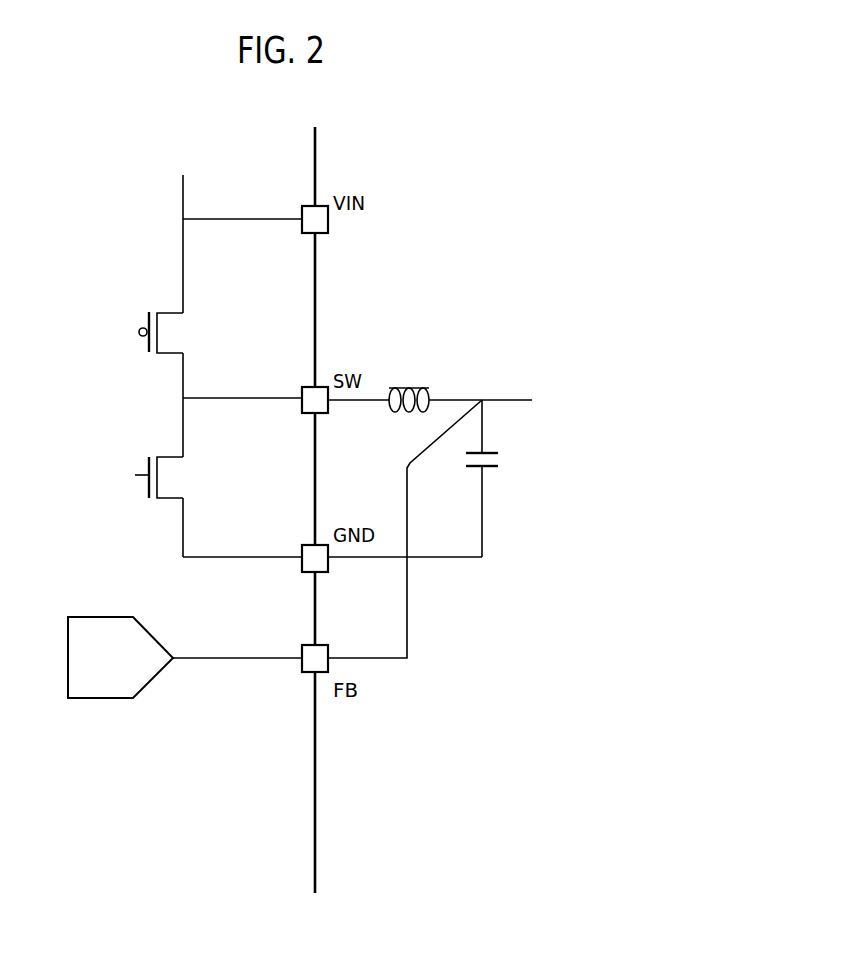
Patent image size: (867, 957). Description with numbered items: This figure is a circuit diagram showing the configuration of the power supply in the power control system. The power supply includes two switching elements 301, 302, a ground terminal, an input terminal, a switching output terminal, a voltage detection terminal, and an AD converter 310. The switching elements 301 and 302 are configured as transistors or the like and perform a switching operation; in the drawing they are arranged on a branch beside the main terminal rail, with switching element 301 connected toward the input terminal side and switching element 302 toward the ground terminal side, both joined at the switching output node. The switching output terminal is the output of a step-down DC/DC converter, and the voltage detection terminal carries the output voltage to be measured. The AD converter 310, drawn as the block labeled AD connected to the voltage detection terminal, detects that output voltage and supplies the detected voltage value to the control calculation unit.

The switching element 301 is at (139, 315).
The switching element 302 is at (139, 487).
The AD converter 310 is at (103, 615).